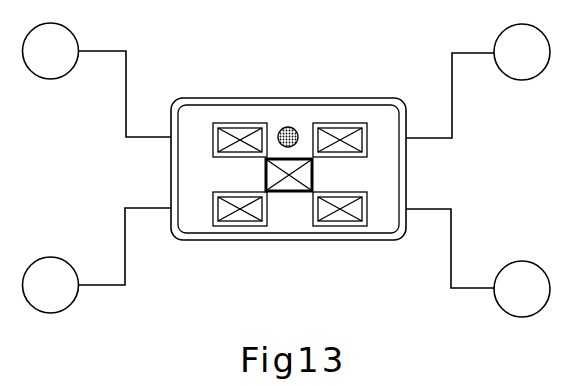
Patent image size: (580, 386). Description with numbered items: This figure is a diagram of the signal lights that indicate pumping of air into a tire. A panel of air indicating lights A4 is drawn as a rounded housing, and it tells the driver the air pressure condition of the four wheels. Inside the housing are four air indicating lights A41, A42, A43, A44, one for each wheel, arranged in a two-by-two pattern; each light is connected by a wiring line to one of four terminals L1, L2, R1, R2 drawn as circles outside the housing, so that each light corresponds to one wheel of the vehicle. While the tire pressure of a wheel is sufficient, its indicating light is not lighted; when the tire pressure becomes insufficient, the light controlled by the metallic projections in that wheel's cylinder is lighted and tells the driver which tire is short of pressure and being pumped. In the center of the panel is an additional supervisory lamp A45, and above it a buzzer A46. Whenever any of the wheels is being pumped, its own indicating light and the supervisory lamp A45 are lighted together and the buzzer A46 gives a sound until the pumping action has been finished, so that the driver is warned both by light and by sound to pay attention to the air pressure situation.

The air indicating lights A4 is at (187, 117).
The air indicating light A41 is at (232, 130).
The air indicating light A42 is at (337, 128).
The air indicating light A43 is at (235, 217).
The air indicating light A44 is at (338, 215).
The supervisory lamp A45 is at (299, 158).
The buzzer A46 is at (289, 126).
The left line 1 terminal L1 is at (97, 80).
The left line 2 terminal L2 is at (97, 260).
The right line 1 terminal R1 is at (478, 81).
The right line 2 terminal R2 is at (478, 263).